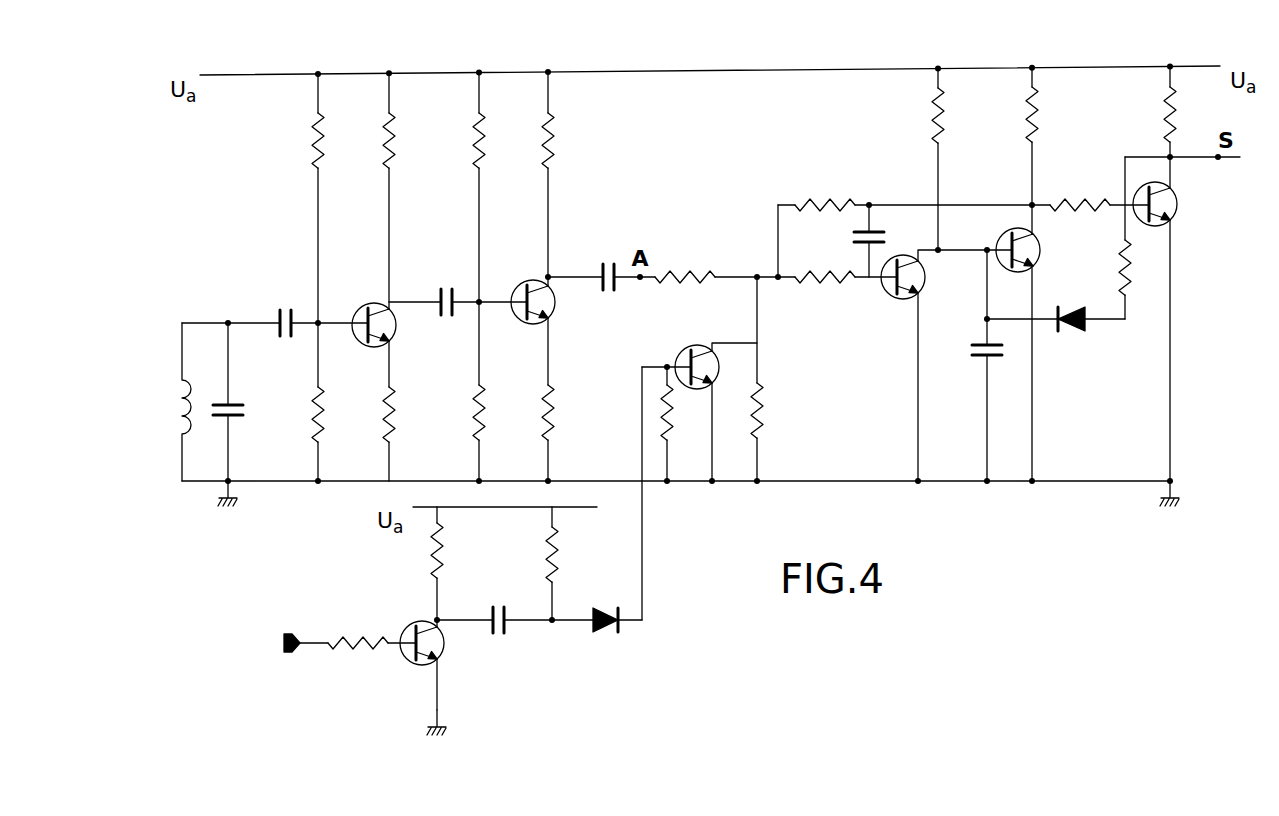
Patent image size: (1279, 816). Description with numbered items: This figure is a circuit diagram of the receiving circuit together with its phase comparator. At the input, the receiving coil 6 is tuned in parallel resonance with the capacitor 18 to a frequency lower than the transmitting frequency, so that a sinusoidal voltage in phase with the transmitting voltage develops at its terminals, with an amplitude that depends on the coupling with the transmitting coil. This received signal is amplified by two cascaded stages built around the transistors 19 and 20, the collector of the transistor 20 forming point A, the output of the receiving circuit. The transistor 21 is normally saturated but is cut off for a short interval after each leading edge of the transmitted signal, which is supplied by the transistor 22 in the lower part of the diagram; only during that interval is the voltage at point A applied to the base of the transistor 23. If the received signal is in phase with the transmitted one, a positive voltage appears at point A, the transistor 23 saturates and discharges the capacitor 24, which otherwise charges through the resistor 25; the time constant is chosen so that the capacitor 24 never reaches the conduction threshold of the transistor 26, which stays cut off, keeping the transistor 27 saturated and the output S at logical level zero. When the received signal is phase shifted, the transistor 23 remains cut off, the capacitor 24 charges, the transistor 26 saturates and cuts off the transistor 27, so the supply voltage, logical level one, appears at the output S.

The receiving coil 6 is at (174, 379).
The capacitor 18 is at (246, 412).
The transistor 19 is at (387, 331).
The transistor 20 is at (556, 307).
The transistor 21 is at (676, 353).
The transistor 22 is at (408, 661).
The transistor 23 is at (902, 301).
The capacitor 24 is at (968, 348).
The resistor 25 is at (922, 123).
The transistor 26 is at (1041, 251).
The transistor 27 is at (1180, 198).